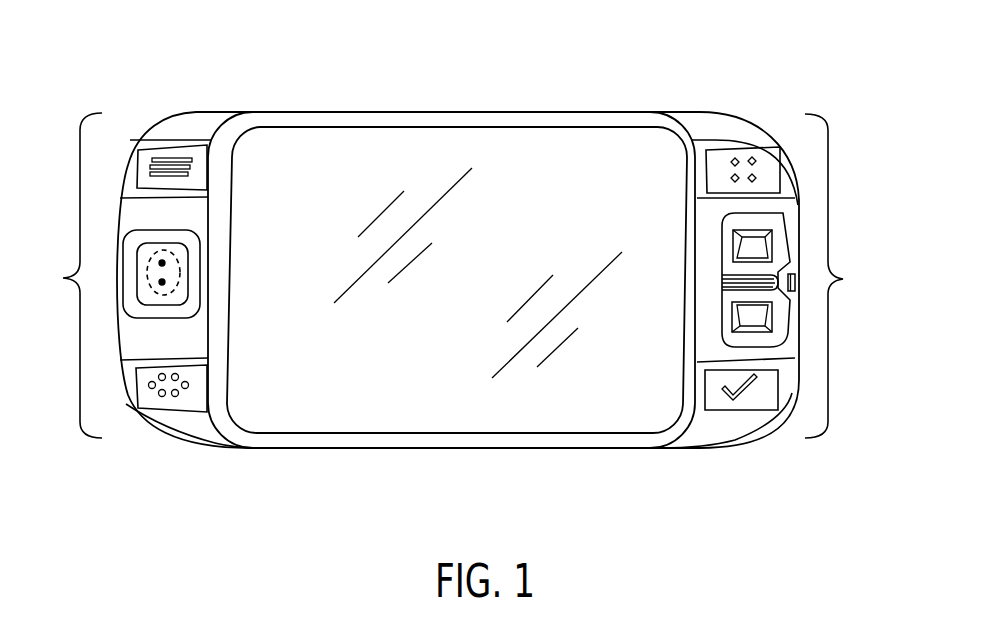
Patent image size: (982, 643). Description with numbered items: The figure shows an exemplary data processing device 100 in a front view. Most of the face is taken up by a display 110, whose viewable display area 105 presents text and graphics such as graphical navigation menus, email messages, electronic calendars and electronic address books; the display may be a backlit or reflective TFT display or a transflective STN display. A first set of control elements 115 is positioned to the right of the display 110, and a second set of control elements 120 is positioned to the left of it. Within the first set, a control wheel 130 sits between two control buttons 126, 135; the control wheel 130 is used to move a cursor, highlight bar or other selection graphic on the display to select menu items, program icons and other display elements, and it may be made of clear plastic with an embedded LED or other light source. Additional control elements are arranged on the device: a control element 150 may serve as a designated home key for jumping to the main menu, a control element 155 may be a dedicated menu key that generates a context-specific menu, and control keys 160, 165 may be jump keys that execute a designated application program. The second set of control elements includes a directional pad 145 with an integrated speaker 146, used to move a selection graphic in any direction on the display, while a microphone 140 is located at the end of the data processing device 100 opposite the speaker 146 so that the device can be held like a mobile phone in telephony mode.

The data processing device 100 is at (116, 28).
The viewable display area 105 is at (385, 406).
The display 110 is at (433, 120).
The first set of control elements 115 is at (773, 281).
The second set of control elements 120 is at (137, 283).
The control button 126 is at (752, 245).
The control wheel 130 is at (762, 285).
The control button 135 is at (752, 317).
The microphone 140 is at (797, 279).
The directional pad 145 is at (153, 283).
The speaker 146 is at (154, 258).
The control element 150 is at (767, 168).
The control element 155 is at (757, 392).
The control key 160 is at (190, 152).
The control key 165 is at (177, 405).